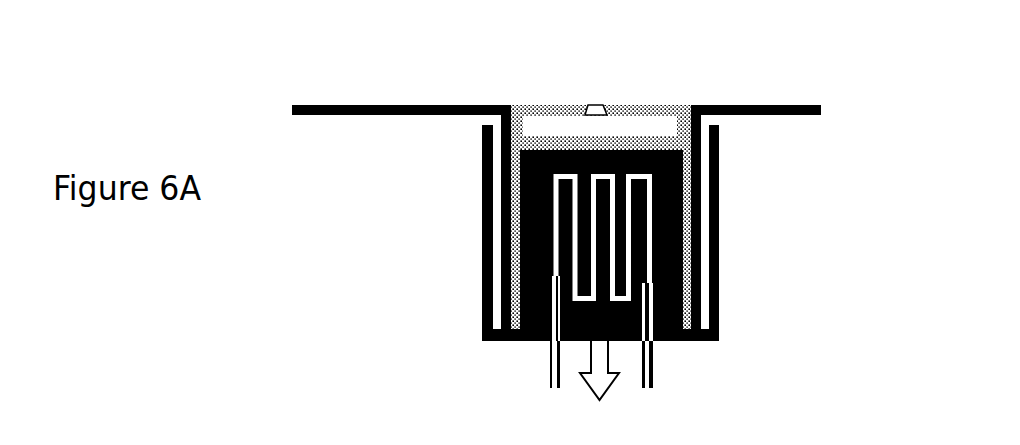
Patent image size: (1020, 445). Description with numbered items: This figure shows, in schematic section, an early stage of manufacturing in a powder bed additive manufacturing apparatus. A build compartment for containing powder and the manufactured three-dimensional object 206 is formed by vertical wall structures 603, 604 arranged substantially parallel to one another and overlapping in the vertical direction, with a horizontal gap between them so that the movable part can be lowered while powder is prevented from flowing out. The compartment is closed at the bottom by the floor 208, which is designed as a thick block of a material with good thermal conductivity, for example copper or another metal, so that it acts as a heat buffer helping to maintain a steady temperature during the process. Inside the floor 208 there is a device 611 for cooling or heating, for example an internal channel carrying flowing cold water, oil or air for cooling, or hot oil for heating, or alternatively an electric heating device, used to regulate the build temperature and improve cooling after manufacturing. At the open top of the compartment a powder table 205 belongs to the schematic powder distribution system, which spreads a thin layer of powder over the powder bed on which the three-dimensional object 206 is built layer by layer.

The powder table 205 is at (775, 97).
The three-dimensional object 206 is at (592, 96).
The outer wall 603 is at (495, 258).
The inner wall 604 is at (475, 235).
The device for cooling or heating 611 is at (542, 365).
The floor 208 is at (659, 333).